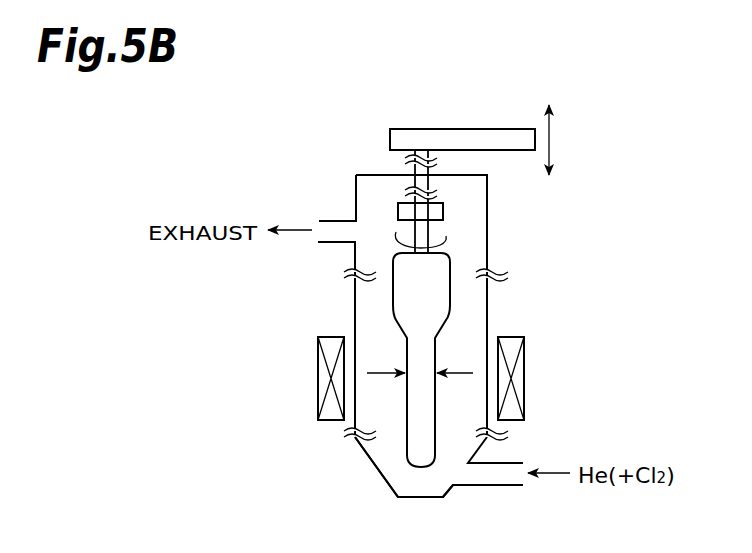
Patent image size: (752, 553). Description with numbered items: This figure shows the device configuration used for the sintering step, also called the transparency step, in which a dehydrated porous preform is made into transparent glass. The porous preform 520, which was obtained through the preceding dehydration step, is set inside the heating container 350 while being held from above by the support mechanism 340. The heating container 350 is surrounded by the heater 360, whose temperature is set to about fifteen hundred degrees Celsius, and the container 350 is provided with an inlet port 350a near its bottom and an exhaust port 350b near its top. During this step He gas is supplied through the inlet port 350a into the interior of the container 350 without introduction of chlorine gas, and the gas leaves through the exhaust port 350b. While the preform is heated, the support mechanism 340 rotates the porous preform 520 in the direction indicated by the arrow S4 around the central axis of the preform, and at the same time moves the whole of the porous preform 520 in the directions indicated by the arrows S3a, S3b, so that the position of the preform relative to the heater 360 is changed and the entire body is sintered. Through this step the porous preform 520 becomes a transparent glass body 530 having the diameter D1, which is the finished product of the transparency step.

The support mechanism 340 is at (458, 138).
The heating container 350 is at (488, 232).
The inlet port 350a is at (493, 485).
The exhaust port 350b is at (333, 220).
The heater 360 is at (318, 378).
The porous preform 520 is at (450, 305).
The transparent glass body 530 is at (405, 432).
The arrow (movement direction) S3a is at (551, 155).
The arrow (movement direction) S3b is at (551, 122).
The arrow (rotation direction) S4 is at (441, 230).
The diameter D1 is at (422, 360).